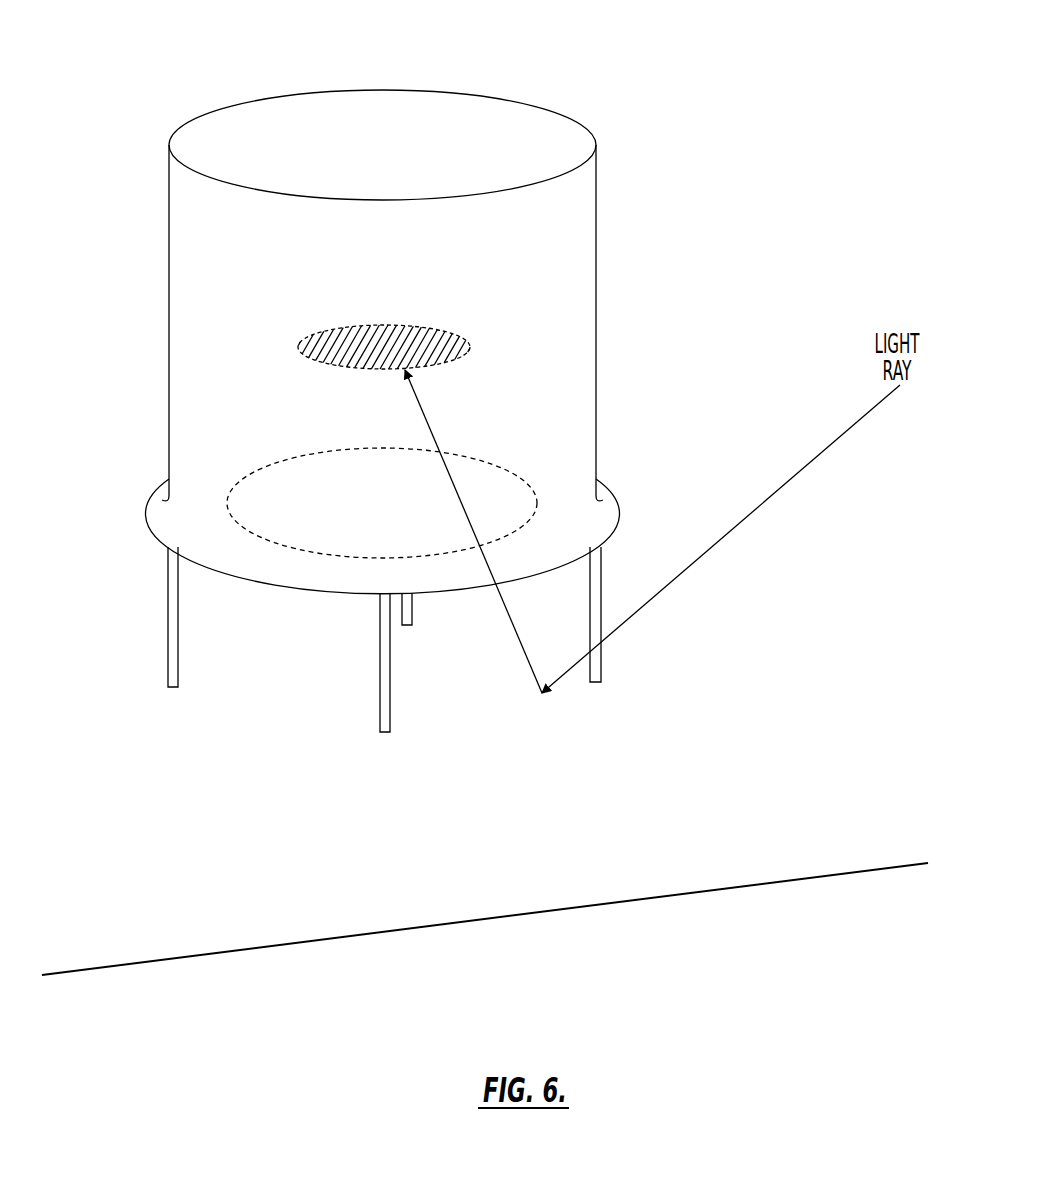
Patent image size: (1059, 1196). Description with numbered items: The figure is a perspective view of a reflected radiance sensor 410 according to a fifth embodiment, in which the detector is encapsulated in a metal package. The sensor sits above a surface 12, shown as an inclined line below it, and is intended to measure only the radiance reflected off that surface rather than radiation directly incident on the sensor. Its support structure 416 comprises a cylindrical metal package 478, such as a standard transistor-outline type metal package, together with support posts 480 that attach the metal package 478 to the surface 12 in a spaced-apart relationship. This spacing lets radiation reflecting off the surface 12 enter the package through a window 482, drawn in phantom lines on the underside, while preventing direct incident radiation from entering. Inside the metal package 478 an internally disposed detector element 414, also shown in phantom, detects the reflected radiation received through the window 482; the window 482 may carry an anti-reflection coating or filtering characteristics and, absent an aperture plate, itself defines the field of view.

The reflected radiance sensor 410 is at (421, 250).
The metal package 478 is at (597, 255).
The support structure 416 is at (689, 346).
The window 482 is at (480, 492).
The detector element 414 is at (445, 345).
The support post 480 is at (170, 605).
The surface 12 is at (618, 864).